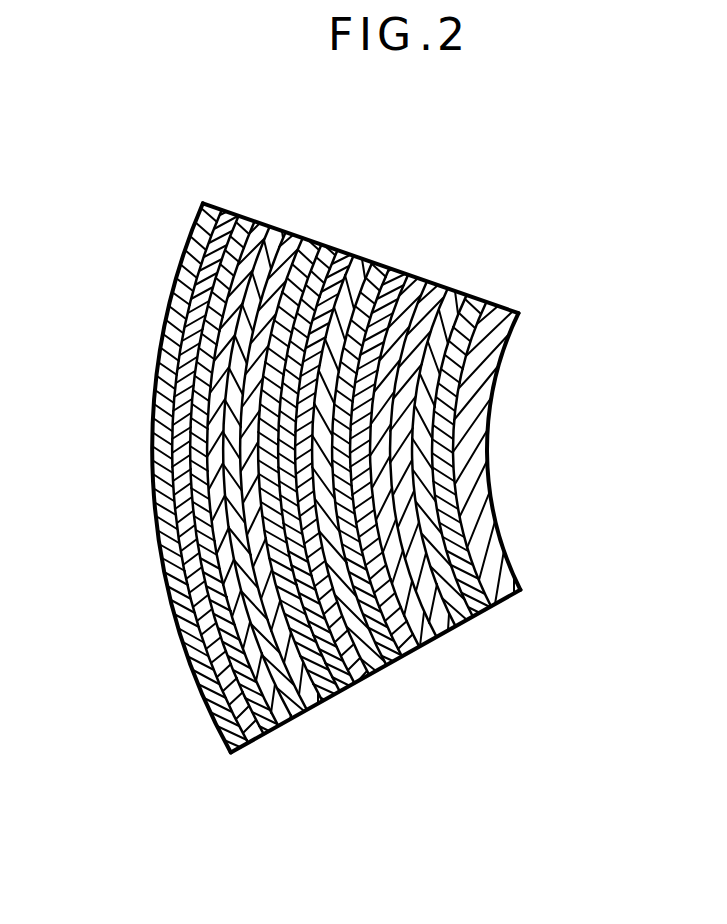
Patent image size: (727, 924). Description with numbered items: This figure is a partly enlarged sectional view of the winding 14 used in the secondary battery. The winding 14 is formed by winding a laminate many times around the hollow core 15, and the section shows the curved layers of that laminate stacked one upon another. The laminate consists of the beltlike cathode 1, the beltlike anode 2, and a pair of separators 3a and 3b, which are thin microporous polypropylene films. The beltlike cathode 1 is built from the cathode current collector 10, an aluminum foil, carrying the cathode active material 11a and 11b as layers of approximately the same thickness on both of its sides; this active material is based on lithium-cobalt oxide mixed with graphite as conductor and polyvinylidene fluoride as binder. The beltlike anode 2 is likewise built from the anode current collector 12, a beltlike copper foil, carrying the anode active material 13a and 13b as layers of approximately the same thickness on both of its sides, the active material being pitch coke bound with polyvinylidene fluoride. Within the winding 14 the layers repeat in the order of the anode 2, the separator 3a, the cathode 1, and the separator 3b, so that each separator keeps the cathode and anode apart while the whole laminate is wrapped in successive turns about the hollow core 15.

The cathode 1 is at (568, 682).
The anode 2 is at (307, 873).
The separator 3a is at (280, 712).
The separator 3b is at (345, 688).
The cathode current collector 10 is at (317, 703).
The cathode active material 11a is at (273, 238).
The cathode active material 11b is at (309, 255).
The anode current collector 12 is at (257, 733).
The anode active material 13a is at (240, 750).
The anode active material 13b is at (268, 730).
The winding 14 is at (148, 485).
The hollow core 15 is at (509, 567).